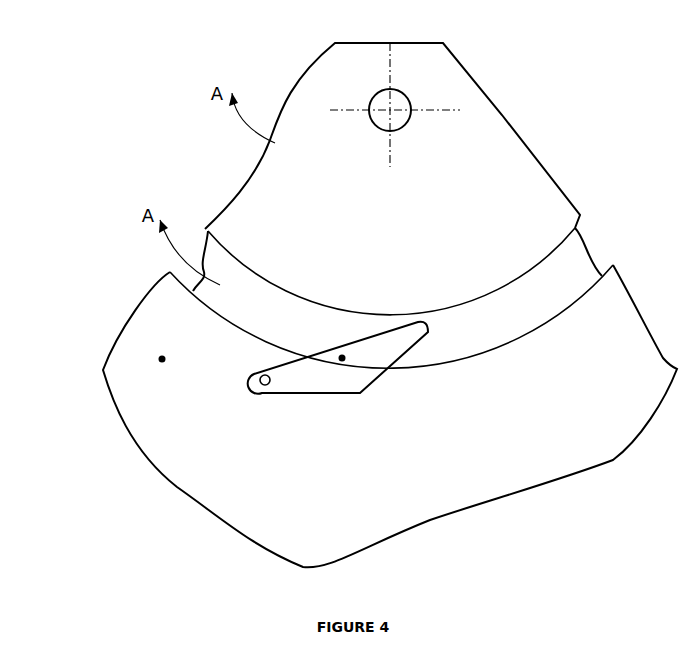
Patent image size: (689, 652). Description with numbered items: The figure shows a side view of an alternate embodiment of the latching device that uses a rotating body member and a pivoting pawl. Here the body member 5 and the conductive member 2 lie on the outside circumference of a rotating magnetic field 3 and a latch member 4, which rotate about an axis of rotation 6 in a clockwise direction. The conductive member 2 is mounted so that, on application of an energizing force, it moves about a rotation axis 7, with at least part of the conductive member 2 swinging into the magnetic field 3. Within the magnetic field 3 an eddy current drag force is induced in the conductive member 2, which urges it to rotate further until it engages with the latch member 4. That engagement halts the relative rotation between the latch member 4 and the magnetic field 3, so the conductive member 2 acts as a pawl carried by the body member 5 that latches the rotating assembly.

The conductive member 2 is at (342, 358).
The magnetic field 3 is at (391, 298).
The latch member 4 is at (392, 147).
The body member 5 is at (162, 359).
The axis of rotation 6 is at (395, 118).
The rotation axis 7 is at (250, 387).